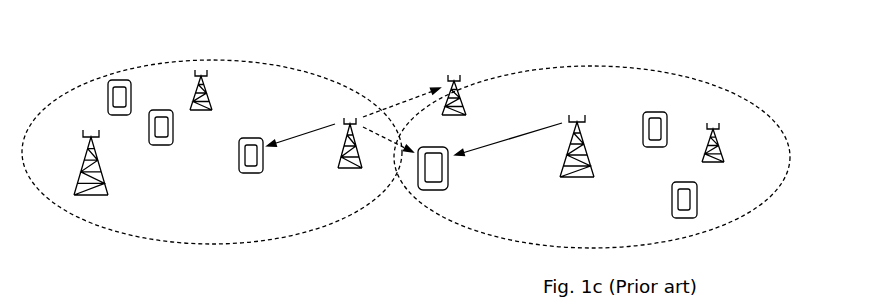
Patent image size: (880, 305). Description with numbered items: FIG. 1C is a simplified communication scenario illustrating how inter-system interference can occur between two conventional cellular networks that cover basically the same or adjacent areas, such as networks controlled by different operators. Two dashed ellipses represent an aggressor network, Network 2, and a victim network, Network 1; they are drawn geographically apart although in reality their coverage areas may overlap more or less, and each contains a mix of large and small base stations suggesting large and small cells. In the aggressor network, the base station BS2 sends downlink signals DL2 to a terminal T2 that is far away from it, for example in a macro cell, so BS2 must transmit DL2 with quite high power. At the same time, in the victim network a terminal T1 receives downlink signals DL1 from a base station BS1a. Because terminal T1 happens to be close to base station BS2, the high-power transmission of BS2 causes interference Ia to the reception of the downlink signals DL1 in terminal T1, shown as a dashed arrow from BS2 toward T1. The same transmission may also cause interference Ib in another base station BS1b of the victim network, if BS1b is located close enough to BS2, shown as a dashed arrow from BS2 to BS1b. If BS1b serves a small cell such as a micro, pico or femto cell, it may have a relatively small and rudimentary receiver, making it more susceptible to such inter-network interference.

The aggressor cellular network Network 2 is at (183, 47).
The victim cellular network Network 1 is at (635, 59).
The terminal T2 is at (238, 156).
The base station BS2 is at (337, 158).
The downlink signals DL2 is at (285, 112).
The base station BS1b is at (467, 100).
The interference Ib is at (393, 89).
The interference Ia is at (384, 144).
The terminal T1 is at (448, 165).
The downlink signals DL1 is at (537, 117).
The base station BS1a is at (592, 160).